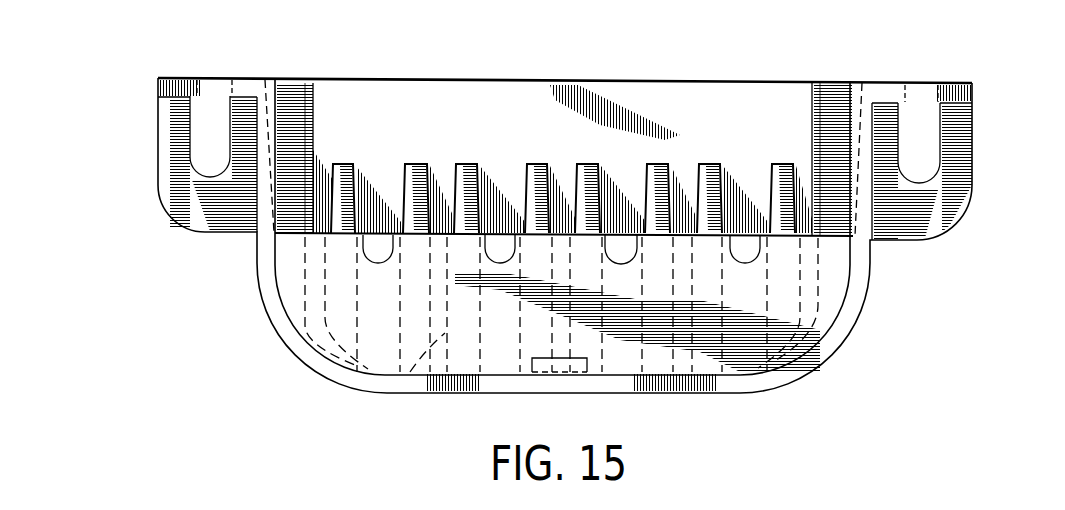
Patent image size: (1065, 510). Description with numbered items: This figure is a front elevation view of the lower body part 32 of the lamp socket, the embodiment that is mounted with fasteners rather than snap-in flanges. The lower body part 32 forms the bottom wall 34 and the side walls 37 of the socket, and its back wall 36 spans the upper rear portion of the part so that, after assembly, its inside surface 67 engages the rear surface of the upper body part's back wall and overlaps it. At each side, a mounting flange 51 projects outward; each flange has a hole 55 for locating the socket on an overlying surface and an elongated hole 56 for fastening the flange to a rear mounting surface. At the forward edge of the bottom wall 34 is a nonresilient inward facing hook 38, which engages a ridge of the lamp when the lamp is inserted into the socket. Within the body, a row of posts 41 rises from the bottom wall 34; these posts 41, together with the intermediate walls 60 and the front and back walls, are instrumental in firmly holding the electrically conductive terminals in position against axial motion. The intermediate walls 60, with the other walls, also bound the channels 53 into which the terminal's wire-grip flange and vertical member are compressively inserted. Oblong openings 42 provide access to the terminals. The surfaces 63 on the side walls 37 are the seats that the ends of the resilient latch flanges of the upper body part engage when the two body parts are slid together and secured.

The lower body part 32 is at (299, 368).
The bottom wall 34 is at (615, 383).
The back wall 36 is at (479, 79).
The side walls 37 is at (272, 297).
The nonresilient inward facing hook 38 is at (545, 366).
The posts 41 is at (412, 163).
The oblong openings 42 is at (745, 254).
The mounting flanges 51 is at (172, 121).
The channels 53 is at (622, 186).
The holes 55 is at (215, 72).
The elongated holes 56 is at (215, 151).
The intermediate walls 60 is at (411, 373).
The surfaces 63 is at (263, 241).
The inside surface 67 is at (398, 104).